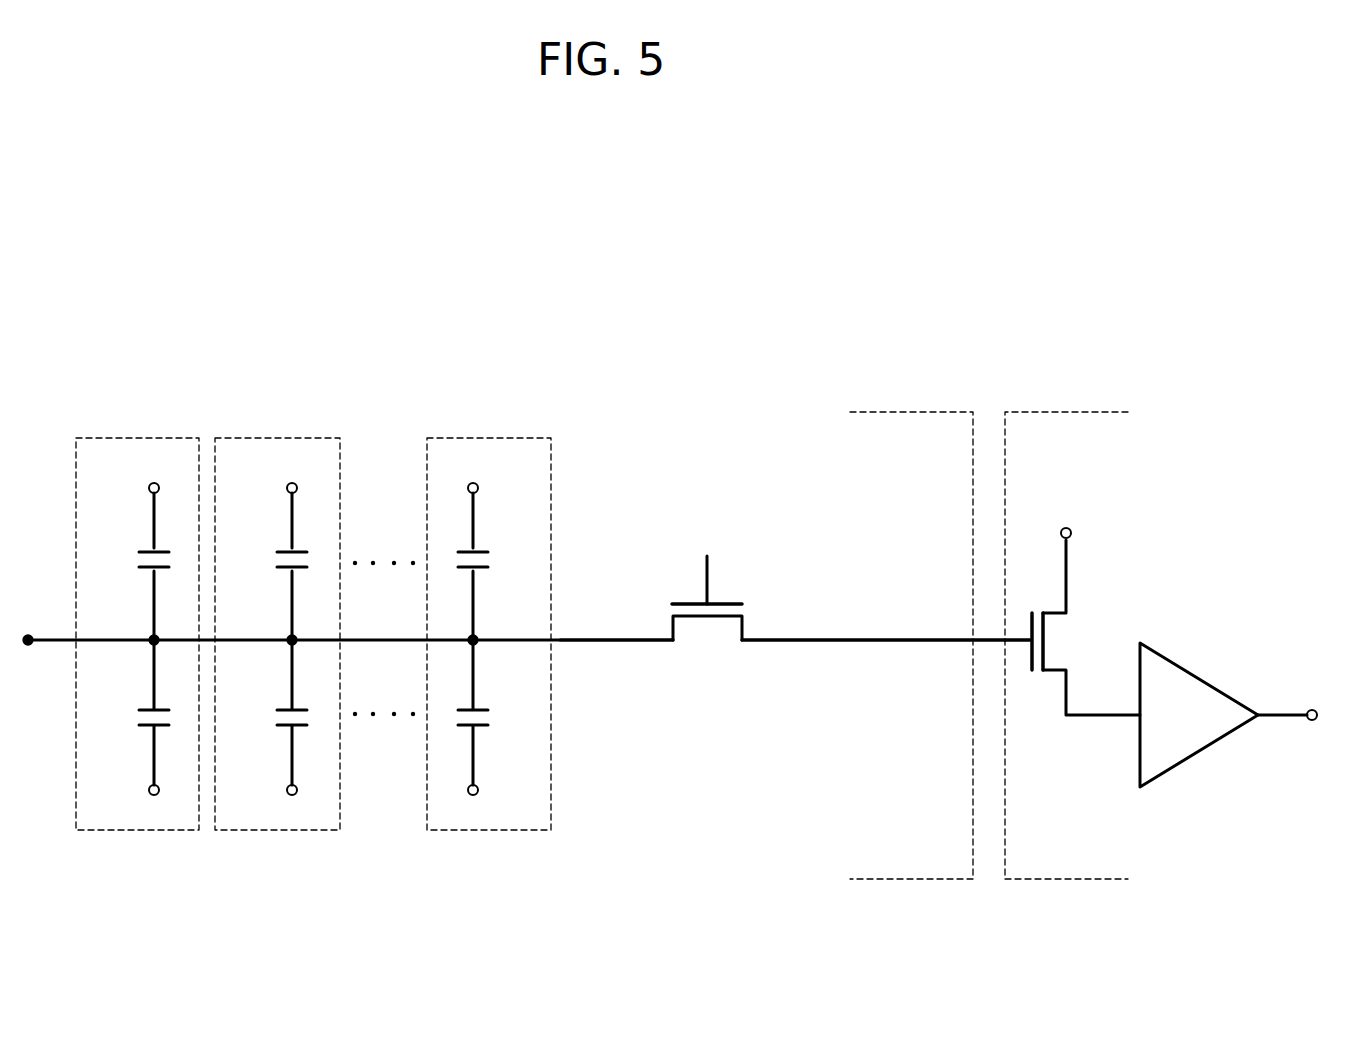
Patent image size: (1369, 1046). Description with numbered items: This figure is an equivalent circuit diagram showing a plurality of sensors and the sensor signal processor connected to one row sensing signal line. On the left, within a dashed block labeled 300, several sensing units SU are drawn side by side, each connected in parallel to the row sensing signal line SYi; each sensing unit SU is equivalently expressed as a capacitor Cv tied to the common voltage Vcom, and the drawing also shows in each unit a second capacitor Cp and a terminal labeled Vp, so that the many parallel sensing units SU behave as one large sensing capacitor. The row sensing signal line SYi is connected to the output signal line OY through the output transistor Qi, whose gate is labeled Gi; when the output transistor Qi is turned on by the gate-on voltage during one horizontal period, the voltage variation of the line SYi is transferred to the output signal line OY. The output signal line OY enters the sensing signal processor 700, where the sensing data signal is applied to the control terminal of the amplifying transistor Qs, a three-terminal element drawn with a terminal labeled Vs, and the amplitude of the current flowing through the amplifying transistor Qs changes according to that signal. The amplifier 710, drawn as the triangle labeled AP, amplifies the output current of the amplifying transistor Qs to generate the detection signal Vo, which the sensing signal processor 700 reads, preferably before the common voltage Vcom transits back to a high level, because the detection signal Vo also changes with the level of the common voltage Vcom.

The display panel / sensing area 300 is at (896, 412).
The sensing signal processor 700 is at (1068, 412).
The amplifier 710 is at (1195, 757).
The sensing unit SU is at (154, 438).
The capacitor Cv is at (131, 557).
The reference capacitor Cp is at (131, 716).
The common voltage Vcom is at (157, 471).
The reference voltage Vp is at (155, 807).
The row sensing signal line SYi is at (610, 642).
The output transistor Qi is at (707, 604).
The gate line Gi is at (703, 563).
The output signal line OY is at (860, 642).
The amplifying transistor Qs is at (1072, 603).
The reset voltage Vs is at (1065, 515).
The amplifier AP is at (1199, 715).
The detection signal Vo is at (1309, 715).